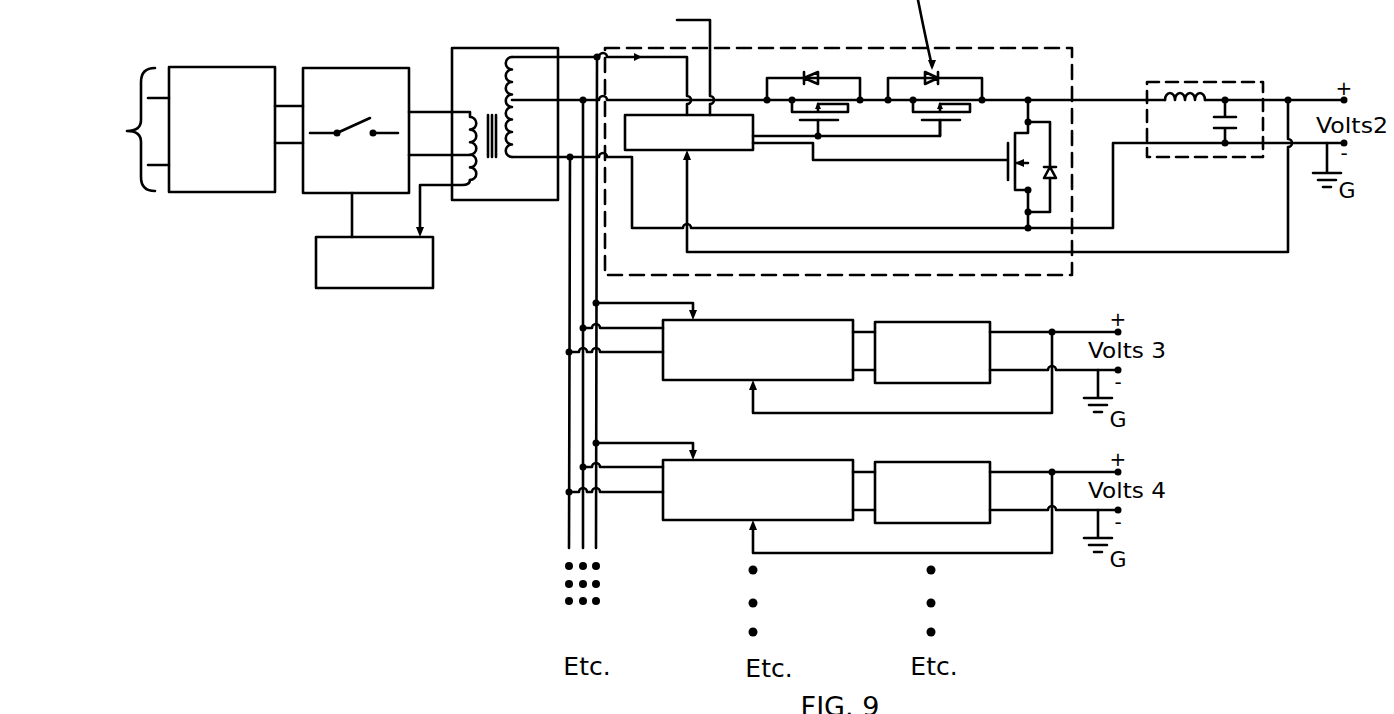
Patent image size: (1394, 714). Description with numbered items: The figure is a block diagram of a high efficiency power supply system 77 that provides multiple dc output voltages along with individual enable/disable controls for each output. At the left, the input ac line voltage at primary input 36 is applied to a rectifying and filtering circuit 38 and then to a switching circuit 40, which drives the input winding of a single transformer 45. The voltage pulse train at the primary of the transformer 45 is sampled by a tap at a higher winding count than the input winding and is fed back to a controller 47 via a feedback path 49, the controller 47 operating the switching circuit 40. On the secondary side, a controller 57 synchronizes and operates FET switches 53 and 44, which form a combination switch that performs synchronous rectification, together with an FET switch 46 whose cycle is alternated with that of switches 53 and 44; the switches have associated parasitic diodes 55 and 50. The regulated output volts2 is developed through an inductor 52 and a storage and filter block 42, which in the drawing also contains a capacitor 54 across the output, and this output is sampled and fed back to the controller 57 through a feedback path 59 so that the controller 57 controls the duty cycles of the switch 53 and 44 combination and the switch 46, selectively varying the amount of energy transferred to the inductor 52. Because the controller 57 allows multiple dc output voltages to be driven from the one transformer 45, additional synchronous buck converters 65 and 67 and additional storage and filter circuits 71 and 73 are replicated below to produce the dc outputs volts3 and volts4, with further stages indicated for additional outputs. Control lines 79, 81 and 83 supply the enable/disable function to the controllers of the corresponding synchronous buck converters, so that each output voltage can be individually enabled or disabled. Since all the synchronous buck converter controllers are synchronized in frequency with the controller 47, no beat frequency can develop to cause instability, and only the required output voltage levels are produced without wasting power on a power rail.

The primary input 36 is at (100, 129).
The rectifying and filtering circuit 38 is at (210, 193).
The switching circuit 40 is at (375, 68).
The storage and filter block 42 is at (1235, 107).
The FET switch 44 is at (953, 93).
The transformer 45 is at (520, 48).
The FET switch 46 is at (995, 175).
The controller 47 is at (333, 288).
The feedback path 49 is at (438, 188).
The parasitic diode 50 is at (1057, 172).
The inductor 52 is at (1188, 90).
The FET switch 53 is at (832, 92).
The capacitor 54 is at (1215, 125).
The parasitic diode 55 is at (808, 70).
The controller 57 is at (702, 150).
The feedback path 59 is at (1195, 253).
The synchronous buck converter 65 is at (803, 320).
The synchronous buck converter 67 is at (778, 460).
The storage and filter circuit 71 is at (930, 322).
The storage and filter circuit 73 is at (930, 462).
The high efficiency power supply system 77 is at (429, 385).
The control line 79 is at (679, 61).
The control line 81 is at (727, 320).
The control line 83 is at (707, 460).